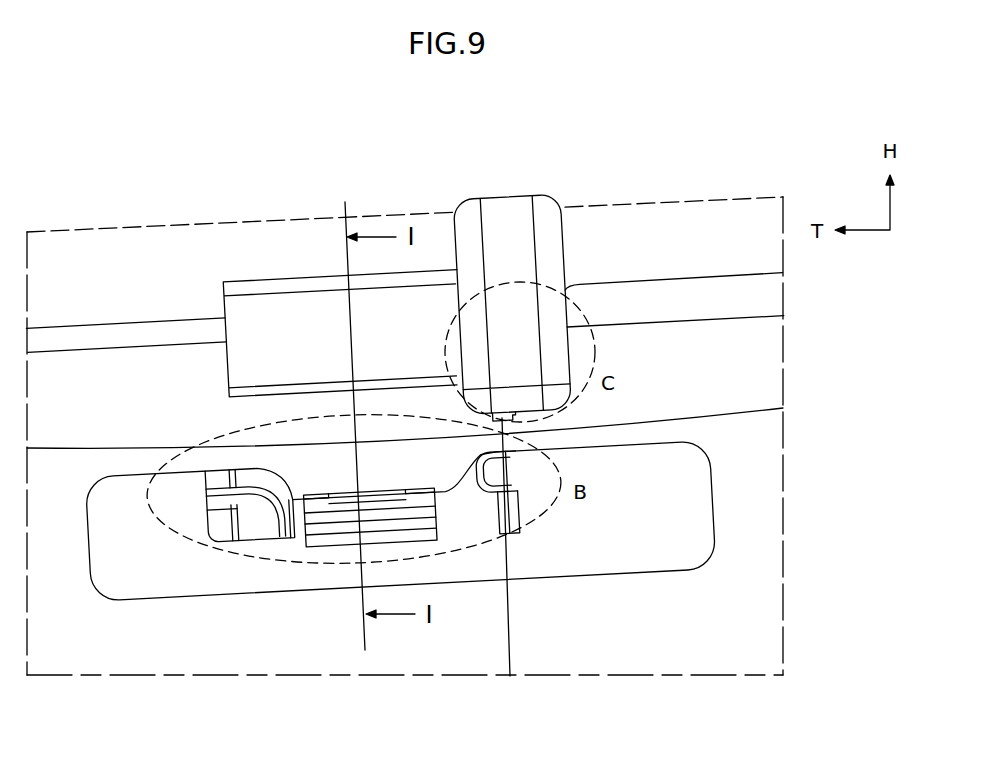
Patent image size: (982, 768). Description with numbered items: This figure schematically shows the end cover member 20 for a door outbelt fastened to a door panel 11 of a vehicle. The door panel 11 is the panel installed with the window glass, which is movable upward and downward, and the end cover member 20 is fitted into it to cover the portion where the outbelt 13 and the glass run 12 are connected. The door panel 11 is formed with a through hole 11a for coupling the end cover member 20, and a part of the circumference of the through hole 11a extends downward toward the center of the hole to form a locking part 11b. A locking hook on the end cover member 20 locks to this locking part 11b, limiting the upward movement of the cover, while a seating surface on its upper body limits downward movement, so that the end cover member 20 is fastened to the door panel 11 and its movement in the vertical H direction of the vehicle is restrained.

The door panel 11 is at (745, 590).
The through hole 11a is at (677, 522).
The locking part 11b is at (288, 472).
The glass run 12 is at (667, 233).
The outbelt 13 is at (198, 241).
The end cover member 20 is at (516, 188).